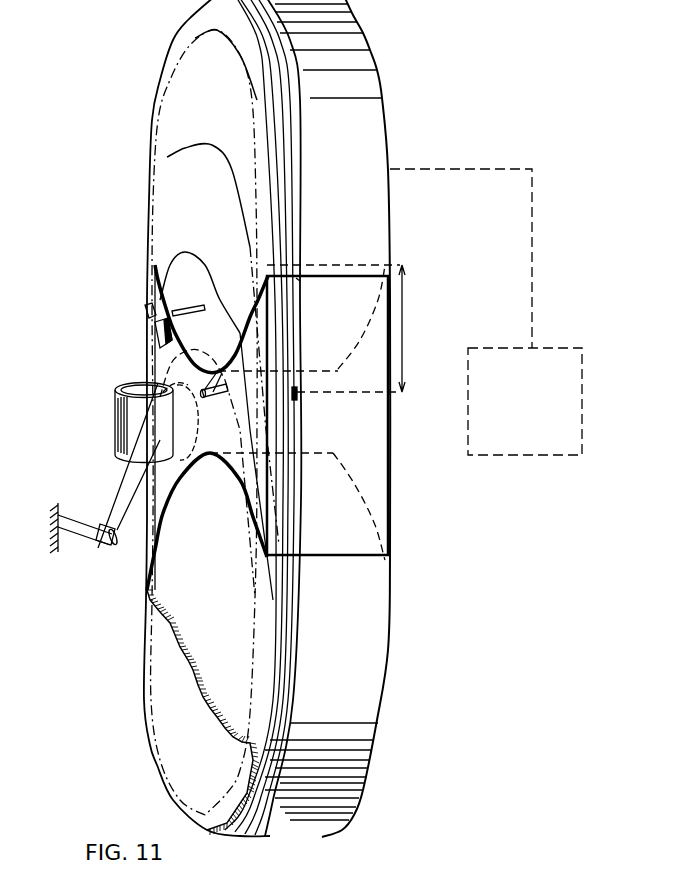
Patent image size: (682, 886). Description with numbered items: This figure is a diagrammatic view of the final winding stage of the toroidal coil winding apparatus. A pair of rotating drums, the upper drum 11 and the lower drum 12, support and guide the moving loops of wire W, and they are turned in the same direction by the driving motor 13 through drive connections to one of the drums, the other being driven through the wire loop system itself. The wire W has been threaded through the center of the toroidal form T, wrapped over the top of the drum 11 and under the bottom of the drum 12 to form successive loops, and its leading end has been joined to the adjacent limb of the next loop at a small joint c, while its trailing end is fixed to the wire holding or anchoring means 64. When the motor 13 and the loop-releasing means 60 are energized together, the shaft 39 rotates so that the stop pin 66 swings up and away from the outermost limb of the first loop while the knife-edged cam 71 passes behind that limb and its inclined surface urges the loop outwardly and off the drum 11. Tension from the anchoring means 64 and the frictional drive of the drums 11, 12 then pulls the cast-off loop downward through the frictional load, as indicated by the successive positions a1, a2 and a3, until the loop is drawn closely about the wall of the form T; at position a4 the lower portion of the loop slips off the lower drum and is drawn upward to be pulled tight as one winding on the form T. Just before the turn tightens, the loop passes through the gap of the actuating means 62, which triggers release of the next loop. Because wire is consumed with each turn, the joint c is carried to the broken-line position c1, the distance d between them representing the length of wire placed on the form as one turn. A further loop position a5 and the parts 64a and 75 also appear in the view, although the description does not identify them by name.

The drum 11 is at (180, 33).
The drum 12 is at (213, 632).
The driving motor 13 is at (557, 390).
The shaft 39 is at (186, 307).
The loop-releasing means 60 is at (123, 301).
The actuating means 62 is at (235, 392).
The wire holding or anchoring means 64 is at (77, 537).
The guide roller 64a is at (122, 583).
The stop pin 66 is at (145, 311).
The knife-edged cam 71 is at (160, 327).
The holder 75 is at (217, 372).
The cast-off loop position a1 is at (233, 50).
The cast-off loop position a2 is at (211, 148).
The cast-off loop position a3 is at (185, 258).
The lower portion of cast-off loop a4 is at (188, 352).
The fifth zone a5 is at (195, 446).
The joint c is at (297, 395).
The displaced joint position c1 is at (300, 281).
The distance d is at (403, 328).
The toroidal form T is at (125, 420).
The wire W is at (128, 487).